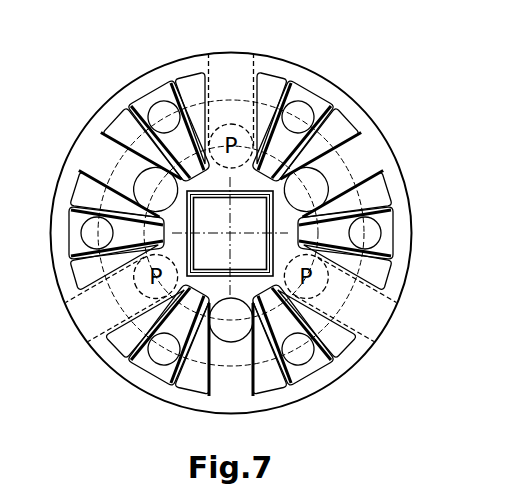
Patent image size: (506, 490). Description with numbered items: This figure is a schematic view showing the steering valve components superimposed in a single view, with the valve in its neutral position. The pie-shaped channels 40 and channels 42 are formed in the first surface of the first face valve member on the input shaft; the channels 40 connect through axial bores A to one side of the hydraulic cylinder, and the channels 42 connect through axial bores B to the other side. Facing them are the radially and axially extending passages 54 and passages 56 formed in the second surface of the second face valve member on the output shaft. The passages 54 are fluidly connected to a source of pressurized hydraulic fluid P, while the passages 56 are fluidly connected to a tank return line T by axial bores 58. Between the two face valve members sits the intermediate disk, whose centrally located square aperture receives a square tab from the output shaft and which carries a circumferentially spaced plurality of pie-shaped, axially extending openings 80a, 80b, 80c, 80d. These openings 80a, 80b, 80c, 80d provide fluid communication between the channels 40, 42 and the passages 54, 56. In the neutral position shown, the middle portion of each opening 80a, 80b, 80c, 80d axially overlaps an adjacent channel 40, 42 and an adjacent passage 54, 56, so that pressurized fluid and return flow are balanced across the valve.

The channel 40 is at (313, 105).
The channel 42 is at (137, 108).
The passage 54 is at (233, 66).
The passage 56 is at (87, 160).
The axial bore 58 is at (310, 170).
The opening 80a is at (347, 128).
The opening 80b is at (262, 82).
The opening 80c is at (193, 80).
The opening 80d is at (122, 128).